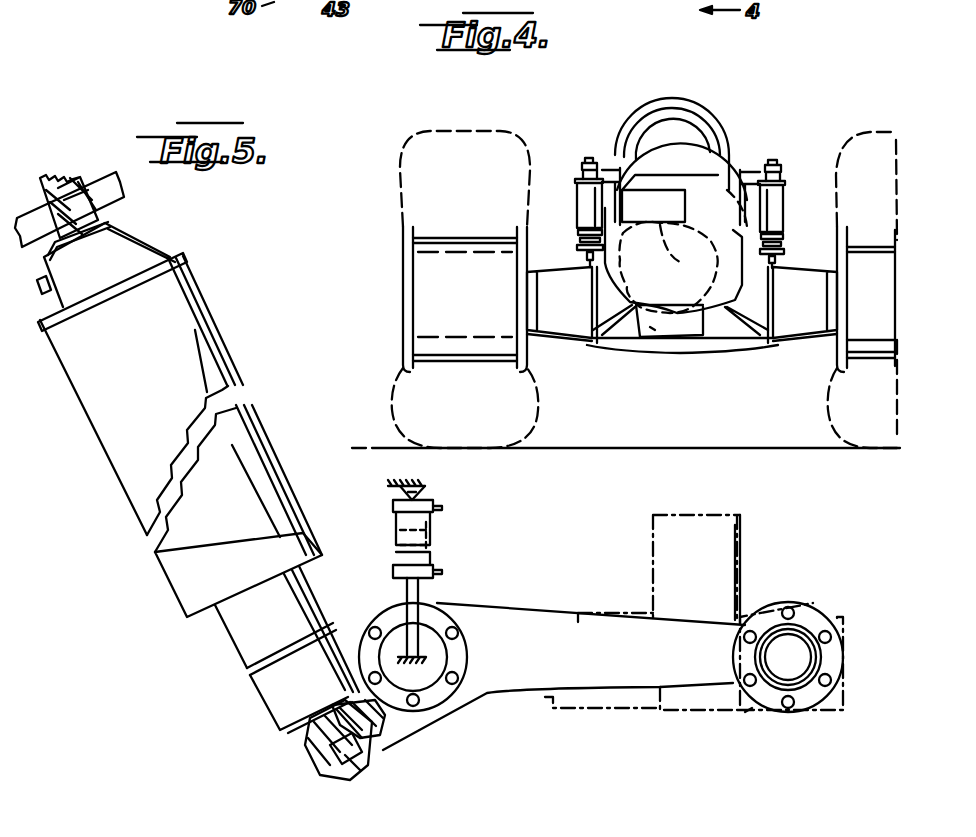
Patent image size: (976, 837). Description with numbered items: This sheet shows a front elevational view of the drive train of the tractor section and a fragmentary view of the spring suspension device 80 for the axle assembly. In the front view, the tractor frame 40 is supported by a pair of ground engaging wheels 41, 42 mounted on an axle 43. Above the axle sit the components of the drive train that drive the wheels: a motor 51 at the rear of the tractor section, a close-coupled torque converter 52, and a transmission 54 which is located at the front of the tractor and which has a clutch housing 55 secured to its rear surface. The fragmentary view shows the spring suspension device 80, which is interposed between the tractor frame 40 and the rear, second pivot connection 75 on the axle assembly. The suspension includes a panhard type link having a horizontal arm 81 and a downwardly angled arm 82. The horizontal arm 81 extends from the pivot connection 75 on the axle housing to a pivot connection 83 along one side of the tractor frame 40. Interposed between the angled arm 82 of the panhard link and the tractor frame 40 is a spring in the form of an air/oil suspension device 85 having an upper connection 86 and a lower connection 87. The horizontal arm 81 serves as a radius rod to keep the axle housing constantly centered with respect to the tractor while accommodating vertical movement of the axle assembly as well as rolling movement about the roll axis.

In FIG. 5, the frame 40 is at (100, 184).
In FIG. 4, the ground engaging wheel 41 is at (482, 124).
In FIG. 4, the ground engaging wheel 42 is at (862, 118).
In FIG. 4, the axle 43 is at (400, 327).
In FIG. 4, the motor 51 is at (698, 102).
In FIG. 4, the torque converter 52 is at (708, 128).
In FIG. 4, the transmission 54 is at (703, 188).
In FIG. 4, the clutch housing 55 is at (657, 327).
In FIG. 5, the second pivot connection 75 is at (430, 636).
In FIG. 4, the spring suspension device 80 is at (780, 226).
In FIG. 5, the spring suspension device 80 is at (253, 380).
In FIG. 5, the horizontal arm 81 is at (534, 624).
In FIG. 5, the downwardly angled arm 82 is at (380, 736).
In FIG. 5, the pivot connection 83 is at (788, 636).
In FIG. 5, the air/oil suspension device 85 is at (195, 327).
In FIG. 5, the upper connection 86 is at (102, 220).
In FIG. 5, the lower connection 87 is at (307, 747).